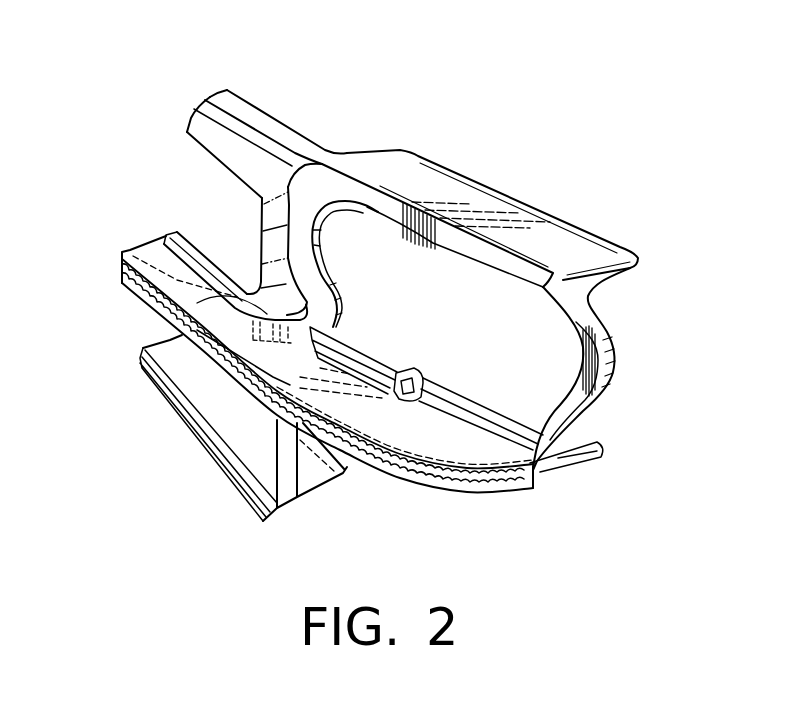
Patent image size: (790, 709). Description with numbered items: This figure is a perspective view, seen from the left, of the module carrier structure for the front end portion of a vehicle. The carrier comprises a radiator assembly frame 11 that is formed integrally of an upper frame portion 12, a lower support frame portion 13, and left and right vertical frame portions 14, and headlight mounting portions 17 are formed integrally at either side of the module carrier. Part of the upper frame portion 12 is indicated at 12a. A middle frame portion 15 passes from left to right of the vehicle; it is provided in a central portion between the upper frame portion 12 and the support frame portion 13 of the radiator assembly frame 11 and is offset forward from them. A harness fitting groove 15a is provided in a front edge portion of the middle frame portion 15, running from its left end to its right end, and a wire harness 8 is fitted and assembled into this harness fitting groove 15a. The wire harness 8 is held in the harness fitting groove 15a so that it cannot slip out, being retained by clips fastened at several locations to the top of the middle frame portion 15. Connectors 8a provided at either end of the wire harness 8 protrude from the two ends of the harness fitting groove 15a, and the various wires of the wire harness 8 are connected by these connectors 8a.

The wire harness 8 is at (377, 462).
The connectors 8a is at (600, 460).
The radiator assembly frame 11 is at (230, 212).
The upper frame portion 12 is at (272, 130).
The flange of upper arm 12a is at (248, 97).
The lower support frame portion 13 is at (257, 462).
The vertical frame portions 14 is at (297, 248).
The middle frame portion 15 is at (177, 297).
The harness fitting groove 15a is at (253, 393).
The headlight mounting portions 17 is at (495, 287).